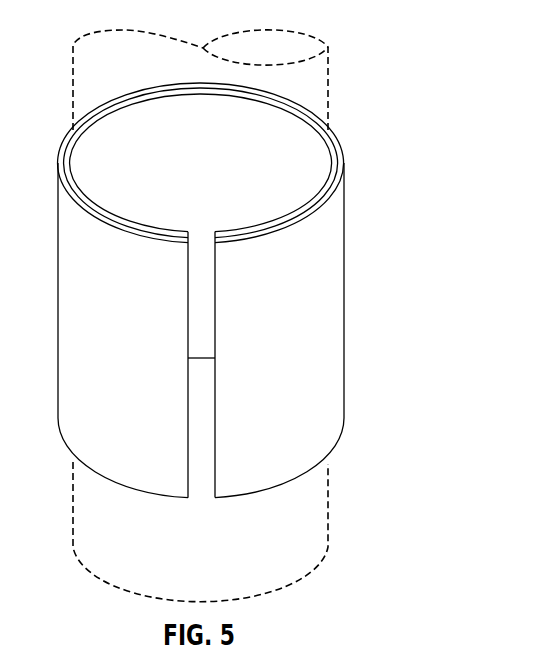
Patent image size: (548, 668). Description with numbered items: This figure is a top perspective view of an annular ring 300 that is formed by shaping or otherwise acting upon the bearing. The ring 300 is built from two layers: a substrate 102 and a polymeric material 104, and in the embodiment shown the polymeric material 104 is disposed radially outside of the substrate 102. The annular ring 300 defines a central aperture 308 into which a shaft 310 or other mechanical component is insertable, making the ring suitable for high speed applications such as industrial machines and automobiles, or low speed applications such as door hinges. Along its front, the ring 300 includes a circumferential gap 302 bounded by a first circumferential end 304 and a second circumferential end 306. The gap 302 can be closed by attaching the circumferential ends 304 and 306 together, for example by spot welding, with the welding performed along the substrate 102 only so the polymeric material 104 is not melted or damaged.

The annular ring 300 is at (356, 82).
The shaft 310 is at (330, 495).
The polymeric material 104 is at (321, 282).
The central aperture 308 is at (311, 167).
The substrate 102 is at (280, 161).
The first circumferential end 304 is at (188, 461).
The second circumferential end 306 is at (215, 443).
The circumferential gap 302 is at (204, 512).